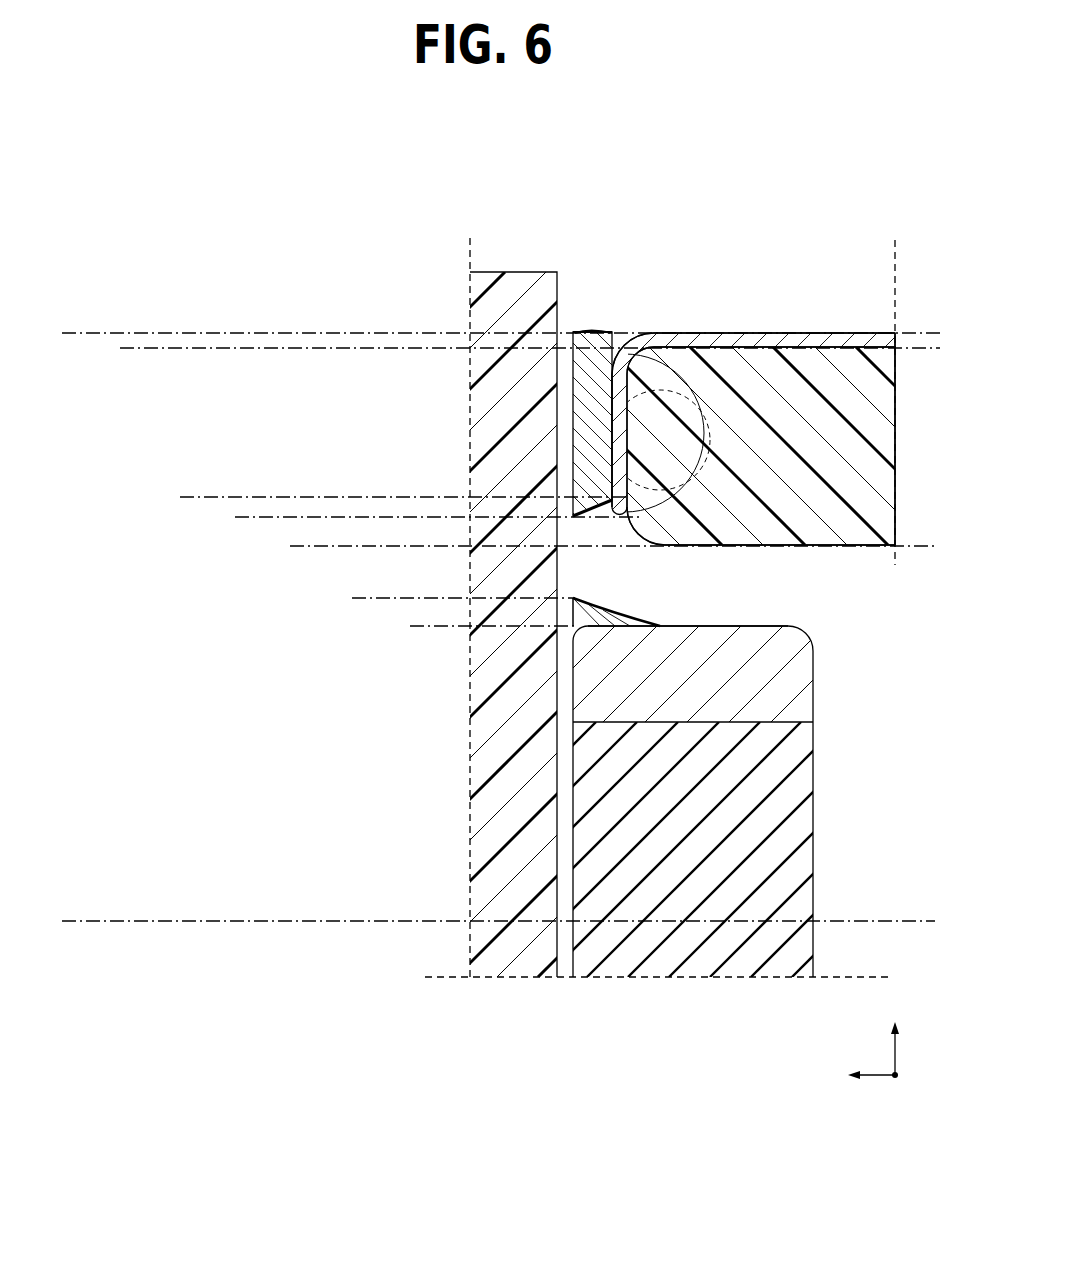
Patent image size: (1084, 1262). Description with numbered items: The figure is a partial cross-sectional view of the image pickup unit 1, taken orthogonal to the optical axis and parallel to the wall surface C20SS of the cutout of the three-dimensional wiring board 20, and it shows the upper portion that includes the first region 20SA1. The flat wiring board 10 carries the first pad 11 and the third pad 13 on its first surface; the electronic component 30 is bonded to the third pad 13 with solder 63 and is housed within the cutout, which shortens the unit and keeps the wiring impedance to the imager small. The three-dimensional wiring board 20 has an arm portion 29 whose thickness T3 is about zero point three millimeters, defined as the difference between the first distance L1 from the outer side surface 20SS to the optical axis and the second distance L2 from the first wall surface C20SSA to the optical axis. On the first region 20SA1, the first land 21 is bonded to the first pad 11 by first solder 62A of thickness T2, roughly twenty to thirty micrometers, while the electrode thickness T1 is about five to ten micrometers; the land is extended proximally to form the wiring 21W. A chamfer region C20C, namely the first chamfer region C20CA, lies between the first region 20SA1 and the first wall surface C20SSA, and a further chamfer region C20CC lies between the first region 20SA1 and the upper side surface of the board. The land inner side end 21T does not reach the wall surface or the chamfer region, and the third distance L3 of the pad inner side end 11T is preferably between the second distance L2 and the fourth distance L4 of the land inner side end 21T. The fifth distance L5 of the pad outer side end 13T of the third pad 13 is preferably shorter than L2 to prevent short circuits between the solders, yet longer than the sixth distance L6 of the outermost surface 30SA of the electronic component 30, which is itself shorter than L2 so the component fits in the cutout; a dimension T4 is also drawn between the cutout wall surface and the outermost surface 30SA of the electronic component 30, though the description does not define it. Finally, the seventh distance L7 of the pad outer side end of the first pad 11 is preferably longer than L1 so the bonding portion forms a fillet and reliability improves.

The image pickup unit 1 is at (278, 217).
The flat wiring board 10 is at (511, 978).
The first pads 11 is at (565, 330).
The pad inner side end 11T is at (740, 360).
The third pads 13 is at (575, 665).
The pad outer side end 13T is at (574, 597).
The three-dimensional wiring board 20 is at (762, 394).
The arm portion 29 is at (770, 330).
The outer side surface 20SS is at (815, 340).
The first region 20SA1 is at (600, 460).
The first land 21 is at (680, 360).
The land inner side end 21T is at (710, 360).
The wiring 21W is at (848, 333).
The electronic component 30 is at (813, 808).
The outermost side surface 30SA is at (775, 616).
The first solder 62A is at (595, 332).
The solder 63 is at (625, 615).
The chamfer region C20C is at (440, 503).
The first chamfer region C20CA is at (615, 529).
The chamfer region C20CC is at (610, 333).
The wall surface C20SS is at (815, 604).
The first distance L1 is at (144, 348).
The second distance L2 is at (315, 546).
The third distance L3 is at (257, 517).
The fourth distance L4 is at (201, 497).
The fifth distance L5 is at (373, 598).
The sixth distance L6 is at (430, 626).
The seventh distance L7 is at (87, 333).
The thickness of the electrode T1 is at (600, 369).
The thickness of the solder T2 is at (640, 408).
The thickness of the arm portion T3 is at (917, 347).
The gap T4 is at (724, 546).